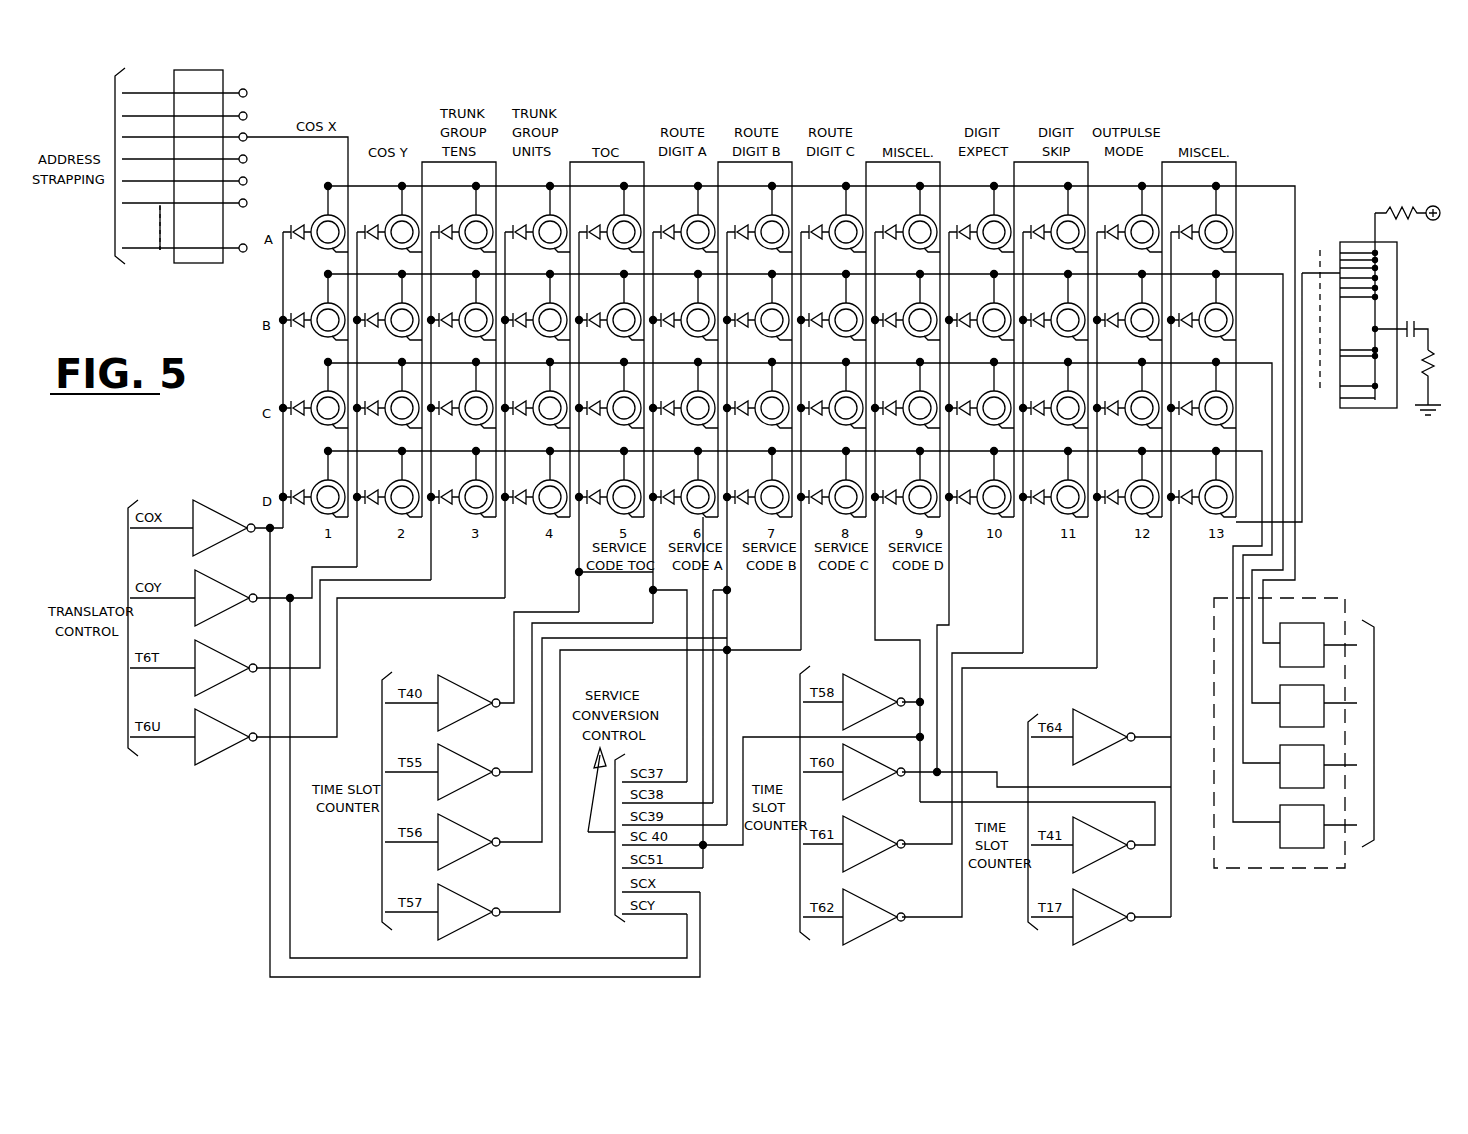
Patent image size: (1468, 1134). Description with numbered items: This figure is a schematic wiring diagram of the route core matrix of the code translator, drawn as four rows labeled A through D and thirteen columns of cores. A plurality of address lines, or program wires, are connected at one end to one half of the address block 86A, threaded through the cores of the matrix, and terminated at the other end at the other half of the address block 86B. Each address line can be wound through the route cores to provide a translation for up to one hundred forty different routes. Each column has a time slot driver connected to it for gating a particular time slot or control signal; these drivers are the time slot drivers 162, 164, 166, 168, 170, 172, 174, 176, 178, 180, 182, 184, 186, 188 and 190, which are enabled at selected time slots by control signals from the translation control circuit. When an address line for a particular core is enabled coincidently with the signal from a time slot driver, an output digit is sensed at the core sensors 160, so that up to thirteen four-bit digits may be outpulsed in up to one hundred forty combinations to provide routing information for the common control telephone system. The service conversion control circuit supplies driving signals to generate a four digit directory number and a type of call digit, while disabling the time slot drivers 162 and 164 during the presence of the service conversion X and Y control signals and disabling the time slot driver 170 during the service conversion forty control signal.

The address block half 86A is at (223, 68).
The address block half 86B is at (1400, 287).
The core sensors 160 is at (1325, 600).
The time slot driver 162 is at (220, 500).
The time slot driver 164 is at (215, 573).
The time slot driver 166 is at (215, 640).
The time slot driver 168 is at (215, 762).
The time slot driver 170 is at (470, 685).
The time slot driver 172 is at (465, 750).
The time slot driver 174 is at (470, 822).
The time slot driver 176 is at (470, 890).
The time slot driver 178 is at (878, 685).
The time slot driver 180 is at (868, 790).
The time slot driver 182 is at (870, 862).
The time slot driver 184 is at (870, 935).
The time slot driver 186 is at (1095, 715).
The time slot driver 188 is at (1100, 862).
The time slot driver 190 is at (1100, 935).